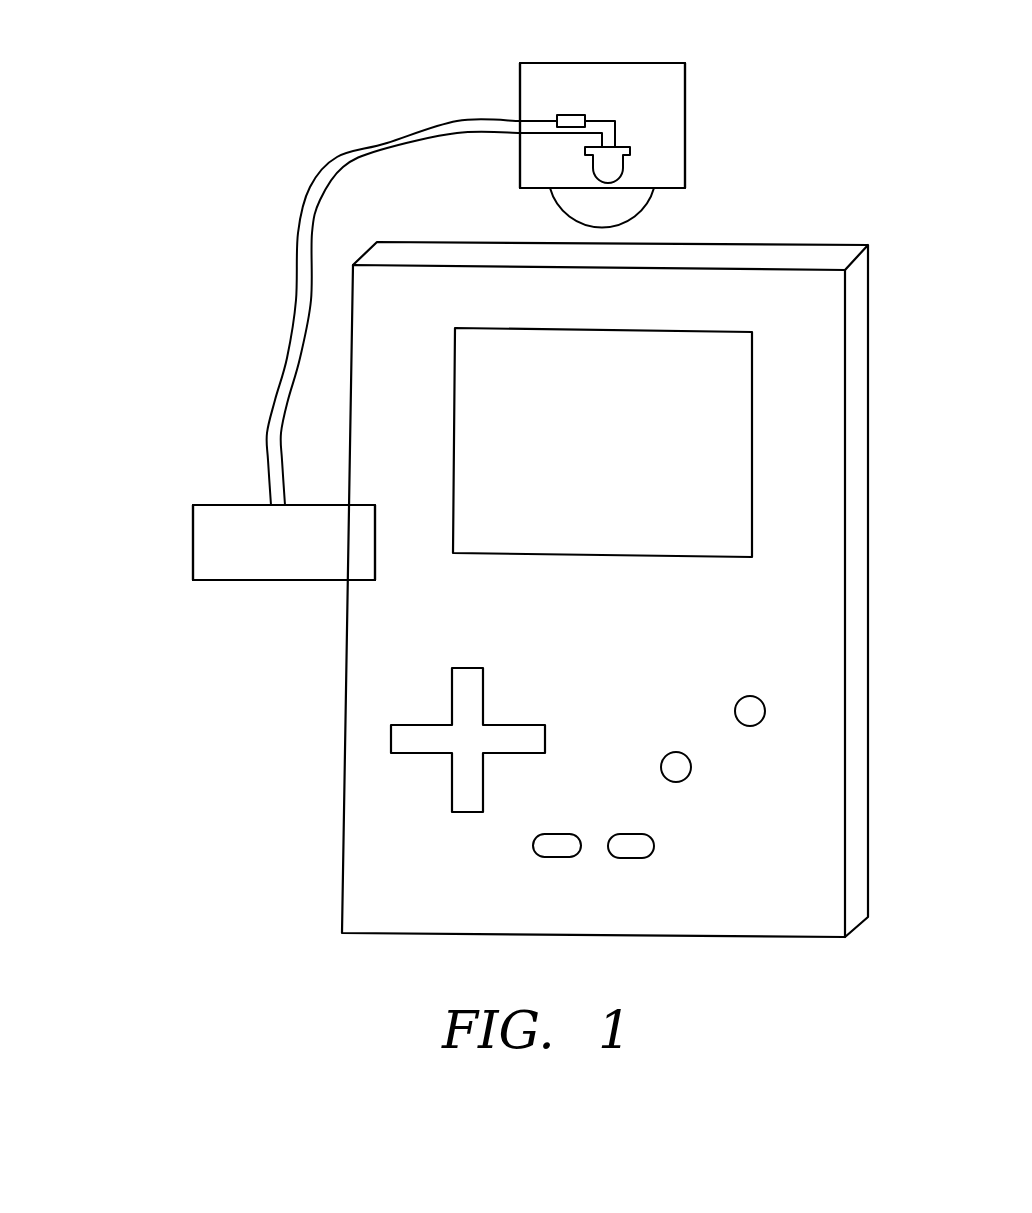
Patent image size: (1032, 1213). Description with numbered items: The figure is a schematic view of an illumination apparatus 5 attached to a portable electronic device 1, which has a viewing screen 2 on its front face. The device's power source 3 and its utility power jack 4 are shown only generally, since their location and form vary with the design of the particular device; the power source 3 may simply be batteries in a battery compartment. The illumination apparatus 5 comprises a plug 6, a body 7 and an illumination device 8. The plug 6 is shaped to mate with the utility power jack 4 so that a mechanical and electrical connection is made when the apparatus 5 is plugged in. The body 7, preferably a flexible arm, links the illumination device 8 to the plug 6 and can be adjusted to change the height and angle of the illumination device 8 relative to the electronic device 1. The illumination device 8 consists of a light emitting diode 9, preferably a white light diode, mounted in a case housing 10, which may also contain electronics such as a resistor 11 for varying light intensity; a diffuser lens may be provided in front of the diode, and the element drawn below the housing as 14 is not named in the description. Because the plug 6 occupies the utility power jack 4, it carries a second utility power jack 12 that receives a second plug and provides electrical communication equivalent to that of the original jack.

The electronic device 1 is at (803, 642).
The viewing screen 2 is at (715, 422).
The power source 3 is at (375, 540).
The utility power jack 4 is at (388, 868).
The illumination apparatus 5 is at (296, 272).
The plug 6 is at (274, 582).
The body 7 is at (296, 323).
The illumination device 8 is at (687, 135).
The light emitting diode 9 is at (625, 165).
The case housing 10 is at (685, 88).
The resistor 11 is at (572, 113).
The second utility power jack 12 is at (193, 545).
The reflector 14 is at (648, 205).